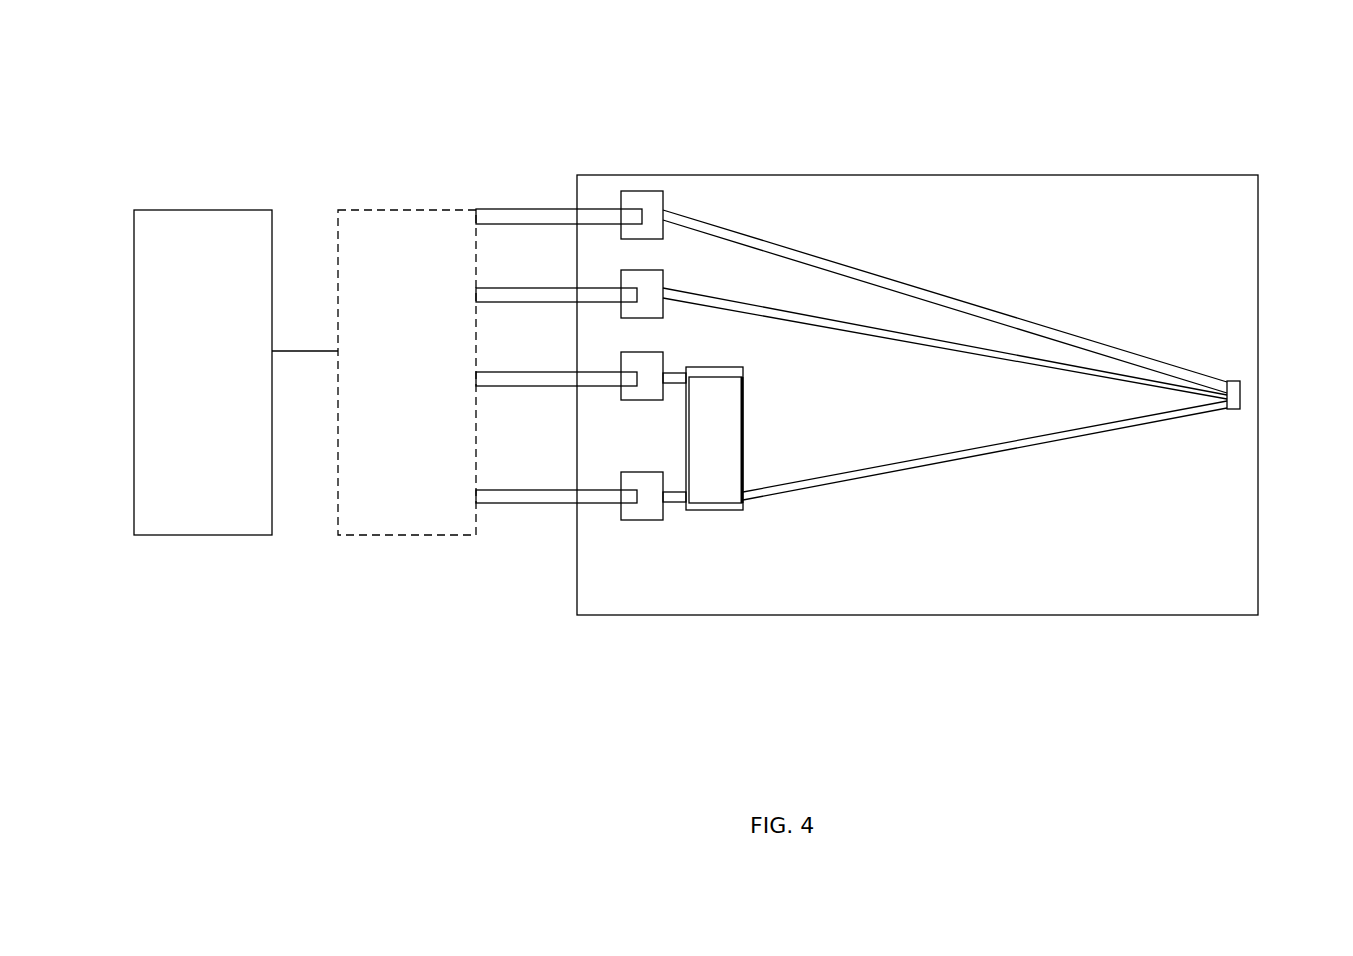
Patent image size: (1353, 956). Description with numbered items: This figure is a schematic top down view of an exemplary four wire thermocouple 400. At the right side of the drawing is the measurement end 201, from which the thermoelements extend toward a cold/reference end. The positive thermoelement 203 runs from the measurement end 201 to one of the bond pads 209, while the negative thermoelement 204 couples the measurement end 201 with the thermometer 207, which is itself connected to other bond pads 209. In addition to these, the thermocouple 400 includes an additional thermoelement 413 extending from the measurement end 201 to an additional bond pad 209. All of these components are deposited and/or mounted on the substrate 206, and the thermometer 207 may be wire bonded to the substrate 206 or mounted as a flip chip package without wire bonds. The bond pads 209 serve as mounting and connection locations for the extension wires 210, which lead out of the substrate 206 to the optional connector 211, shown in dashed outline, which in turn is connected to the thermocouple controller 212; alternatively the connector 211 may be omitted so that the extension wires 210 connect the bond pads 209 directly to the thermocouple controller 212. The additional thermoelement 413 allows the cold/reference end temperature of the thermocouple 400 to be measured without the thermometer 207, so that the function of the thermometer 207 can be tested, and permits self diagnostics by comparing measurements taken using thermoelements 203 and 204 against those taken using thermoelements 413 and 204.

The four wire thermocouple 400 is at (1095, 119).
The thermocouple controller 212 is at (203, 372).
The connector 211 is at (374, 372).
The substrate 206 is at (1184, 539).
The extension wires 210 is at (567, 284).
The bond pads 209 is at (643, 279).
The positive thermoelement 203 is at (913, 272).
The additional thermoelement 413 is at (795, 302).
The thermometer 207 is at (729, 455).
The negative thermoelement 204 is at (977, 471).
The measurement end 201 is at (1245, 367).